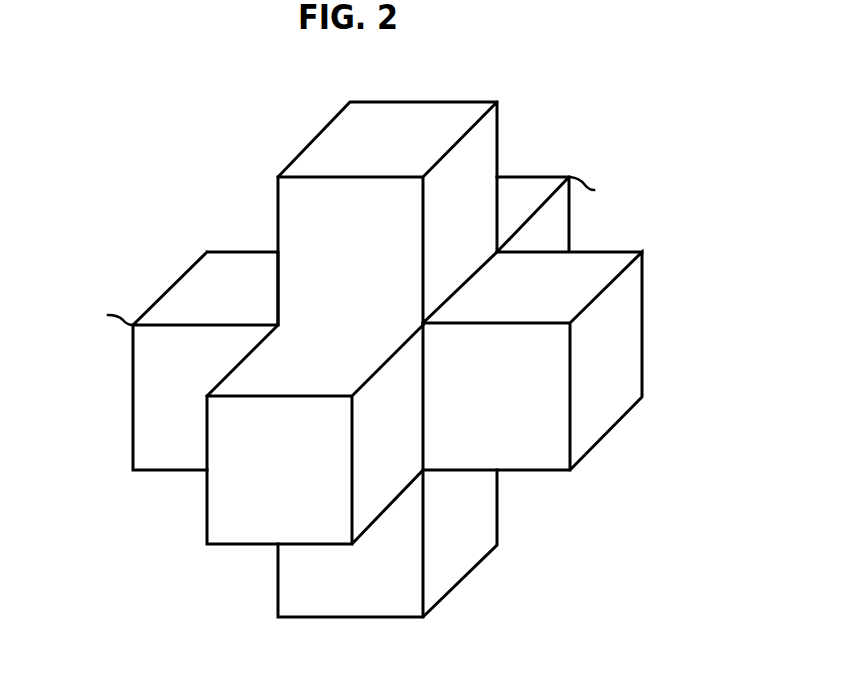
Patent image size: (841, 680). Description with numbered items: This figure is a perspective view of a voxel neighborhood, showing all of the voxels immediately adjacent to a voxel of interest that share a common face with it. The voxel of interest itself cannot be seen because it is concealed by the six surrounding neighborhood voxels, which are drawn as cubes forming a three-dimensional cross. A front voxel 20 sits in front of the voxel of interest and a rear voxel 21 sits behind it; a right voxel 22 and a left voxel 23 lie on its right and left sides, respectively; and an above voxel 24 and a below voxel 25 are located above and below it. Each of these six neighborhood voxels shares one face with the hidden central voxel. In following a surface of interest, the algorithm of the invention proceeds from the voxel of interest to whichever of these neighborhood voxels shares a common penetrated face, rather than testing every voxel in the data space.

The front voxel 20 is at (207, 517).
The rear voxel 21 is at (570, 213).
The right voxel 22 is at (642, 323).
The left voxel 23 is at (133, 397).
The above voxel 24 is at (278, 215).
The below voxel 25 is at (497, 505).